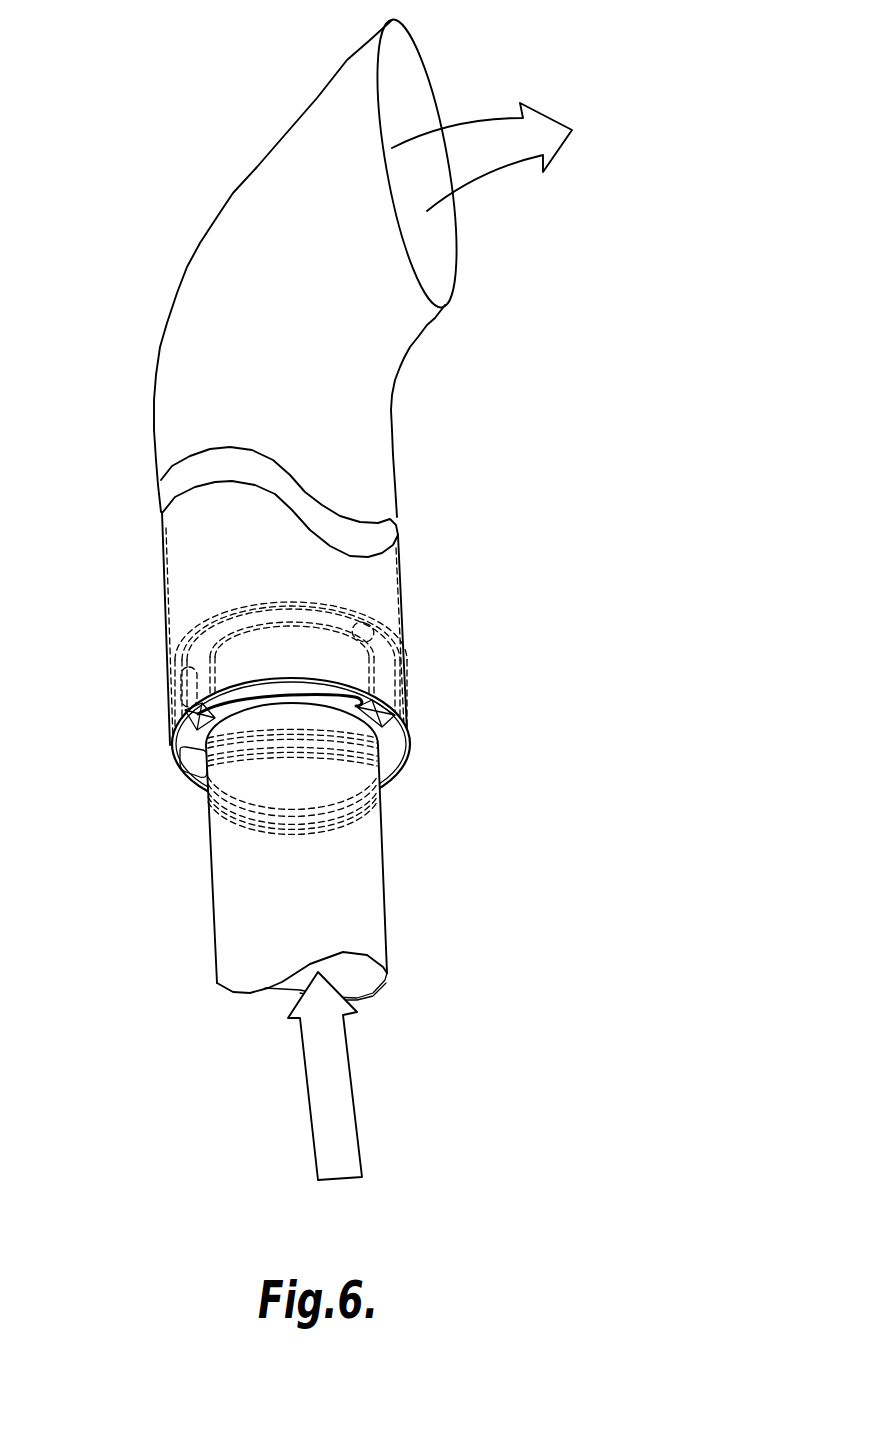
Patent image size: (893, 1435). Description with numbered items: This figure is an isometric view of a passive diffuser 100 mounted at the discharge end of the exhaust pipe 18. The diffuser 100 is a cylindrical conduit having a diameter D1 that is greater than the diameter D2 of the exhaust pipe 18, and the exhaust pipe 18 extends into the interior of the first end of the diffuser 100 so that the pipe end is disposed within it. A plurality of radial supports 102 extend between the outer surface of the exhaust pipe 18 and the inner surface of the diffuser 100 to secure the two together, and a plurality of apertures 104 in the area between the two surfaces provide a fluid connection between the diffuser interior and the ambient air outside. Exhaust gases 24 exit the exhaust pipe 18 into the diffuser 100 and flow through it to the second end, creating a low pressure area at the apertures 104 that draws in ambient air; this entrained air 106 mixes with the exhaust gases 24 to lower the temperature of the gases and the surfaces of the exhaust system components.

The exhaust gases 24 is at (498, 118).
The diffuser 100 is at (395, 433).
The radial supports 102 is at (170, 758).
The apertures 104 is at (187, 768).
The entrained air 106 is at (190, 816).
The exhaust pipe 18 is at (387, 945).
The diameter of the diffuser D1 is at (80, 588).
The diameter of the exhaust pipe D2 is at (132, 904).